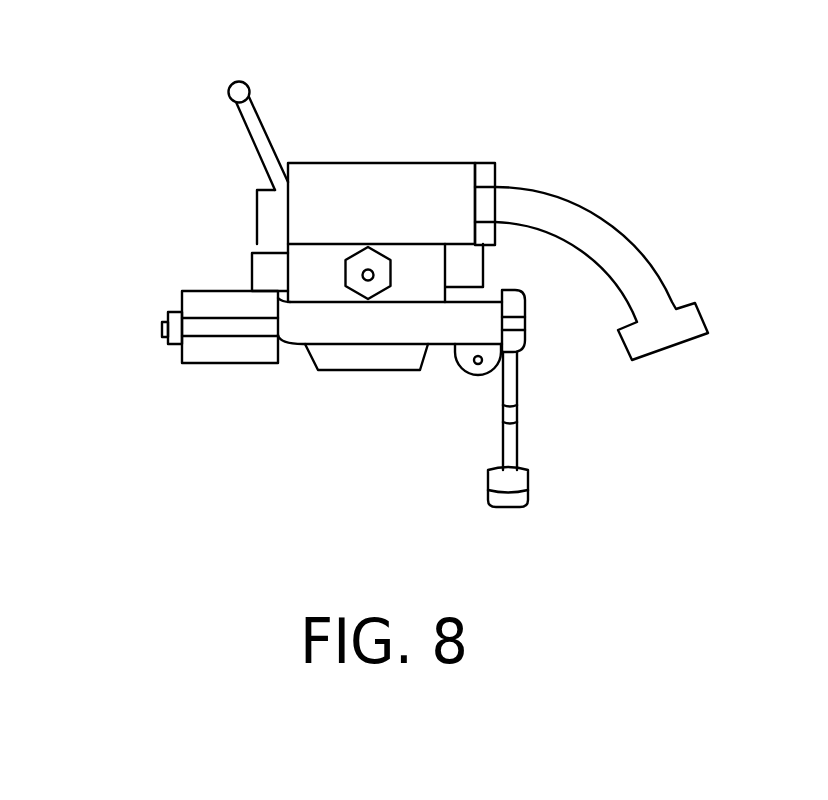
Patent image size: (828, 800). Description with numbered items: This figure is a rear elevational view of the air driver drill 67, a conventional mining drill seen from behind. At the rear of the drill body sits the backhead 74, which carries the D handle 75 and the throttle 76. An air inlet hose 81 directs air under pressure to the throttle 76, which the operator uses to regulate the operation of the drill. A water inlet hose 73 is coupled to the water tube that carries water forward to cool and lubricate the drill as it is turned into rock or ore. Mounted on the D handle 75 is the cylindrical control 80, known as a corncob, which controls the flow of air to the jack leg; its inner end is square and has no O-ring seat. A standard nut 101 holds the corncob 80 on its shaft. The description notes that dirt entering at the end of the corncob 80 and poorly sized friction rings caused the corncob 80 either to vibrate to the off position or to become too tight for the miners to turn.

The air driver drill 67 is at (314, 128).
The water inlet hose 73 is at (518, 432).
The backhead 74 is at (458, 156).
The D handle 75 is at (421, 323).
The throttle 76 is at (230, 88).
The cylindrical control 80 is at (233, 378).
The air inlet hose 81 is at (650, 287).
The standard nut 101 is at (156, 345).